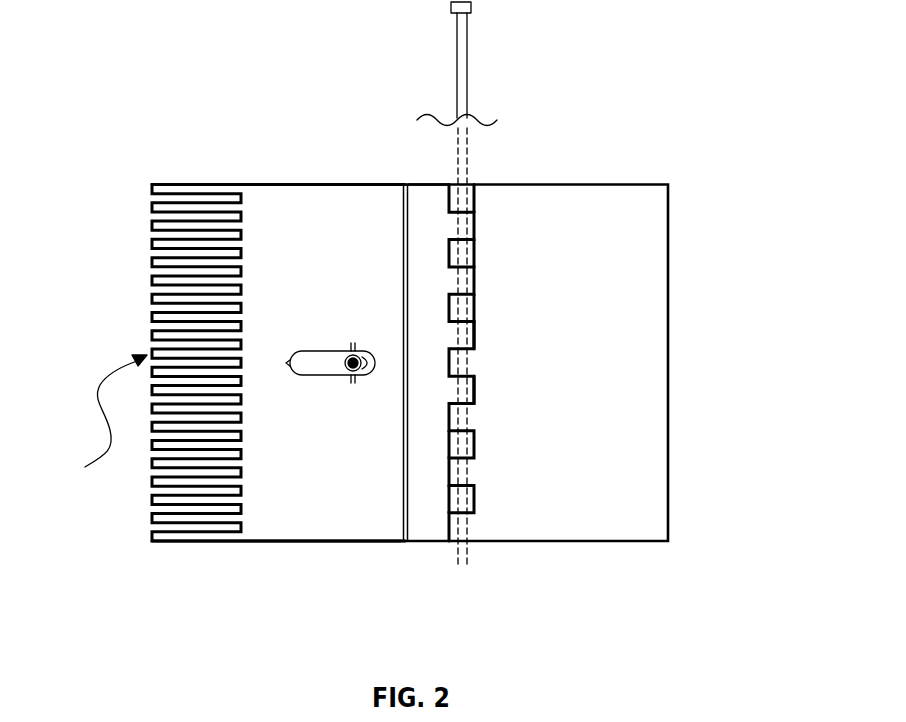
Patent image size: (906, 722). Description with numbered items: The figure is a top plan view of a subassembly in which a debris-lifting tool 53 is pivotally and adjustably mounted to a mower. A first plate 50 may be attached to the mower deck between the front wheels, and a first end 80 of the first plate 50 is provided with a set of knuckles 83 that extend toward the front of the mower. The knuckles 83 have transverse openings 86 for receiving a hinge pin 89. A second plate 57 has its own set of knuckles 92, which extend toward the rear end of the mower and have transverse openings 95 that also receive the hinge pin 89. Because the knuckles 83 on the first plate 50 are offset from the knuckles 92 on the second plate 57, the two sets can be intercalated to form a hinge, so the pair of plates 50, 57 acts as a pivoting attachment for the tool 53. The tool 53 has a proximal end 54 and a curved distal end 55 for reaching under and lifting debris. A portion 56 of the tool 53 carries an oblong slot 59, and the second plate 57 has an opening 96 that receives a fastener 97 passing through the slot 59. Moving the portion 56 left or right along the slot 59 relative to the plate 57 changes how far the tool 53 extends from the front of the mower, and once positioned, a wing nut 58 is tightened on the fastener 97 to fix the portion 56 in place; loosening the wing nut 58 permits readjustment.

The first plate 50 is at (585, 228).
The tool 53 is at (255, 542).
The proximal end 54 is at (403, 502).
The distal end 55 is at (101, 424).
The portion of the tool 56 is at (297, 215).
The second plate 57 is at (427, 183).
The wing nut 58 is at (353, 380).
The oblong slot 59 is at (157, 190).
The first end of the first plate 80 is at (478, 527).
The knuckles 83 is at (481, 299).
The transverse openings 86 is at (462, 497).
The hinge pin 89 is at (466, 50).
The knuckles 92 is at (452, 439).
The transverse openings 95 is at (477, 390).
The opening 96 is at (344, 363).
The fastener 97 is at (355, 352).